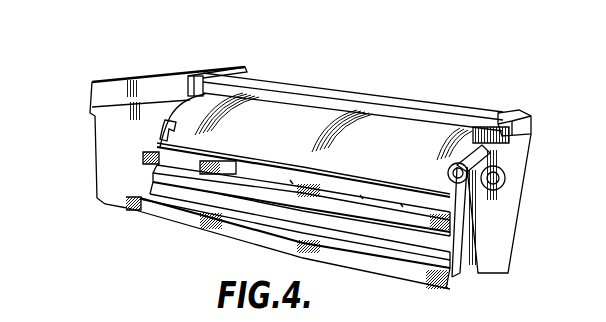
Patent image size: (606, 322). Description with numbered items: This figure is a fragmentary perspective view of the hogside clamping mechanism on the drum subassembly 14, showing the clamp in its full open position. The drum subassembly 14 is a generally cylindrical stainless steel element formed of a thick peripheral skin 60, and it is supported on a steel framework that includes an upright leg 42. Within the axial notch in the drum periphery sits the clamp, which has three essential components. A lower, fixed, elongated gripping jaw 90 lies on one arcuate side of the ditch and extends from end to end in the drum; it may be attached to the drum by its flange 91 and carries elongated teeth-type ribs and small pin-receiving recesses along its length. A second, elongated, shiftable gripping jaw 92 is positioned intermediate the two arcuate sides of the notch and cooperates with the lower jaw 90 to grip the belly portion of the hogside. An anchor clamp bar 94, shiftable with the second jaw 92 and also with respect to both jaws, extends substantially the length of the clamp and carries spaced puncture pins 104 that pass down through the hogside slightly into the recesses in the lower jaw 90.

The drum subassembly 14 is at (380, 140).
The upright leg 42 is at (498, 223).
The peripheral skin 60 is at (303, 130).
The lower gripping jaw 90 is at (146, 196).
The flange 91 is at (150, 181).
The shiftable gripping jaw 92 is at (143, 155).
The anchor clamp bar 94 is at (163, 147).
The puncture pins 104 is at (243, 158).